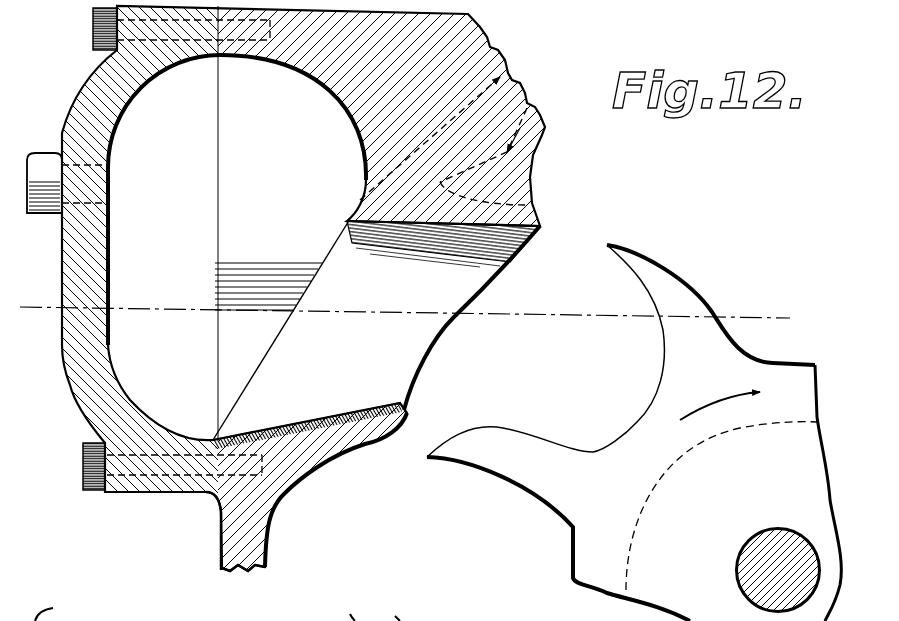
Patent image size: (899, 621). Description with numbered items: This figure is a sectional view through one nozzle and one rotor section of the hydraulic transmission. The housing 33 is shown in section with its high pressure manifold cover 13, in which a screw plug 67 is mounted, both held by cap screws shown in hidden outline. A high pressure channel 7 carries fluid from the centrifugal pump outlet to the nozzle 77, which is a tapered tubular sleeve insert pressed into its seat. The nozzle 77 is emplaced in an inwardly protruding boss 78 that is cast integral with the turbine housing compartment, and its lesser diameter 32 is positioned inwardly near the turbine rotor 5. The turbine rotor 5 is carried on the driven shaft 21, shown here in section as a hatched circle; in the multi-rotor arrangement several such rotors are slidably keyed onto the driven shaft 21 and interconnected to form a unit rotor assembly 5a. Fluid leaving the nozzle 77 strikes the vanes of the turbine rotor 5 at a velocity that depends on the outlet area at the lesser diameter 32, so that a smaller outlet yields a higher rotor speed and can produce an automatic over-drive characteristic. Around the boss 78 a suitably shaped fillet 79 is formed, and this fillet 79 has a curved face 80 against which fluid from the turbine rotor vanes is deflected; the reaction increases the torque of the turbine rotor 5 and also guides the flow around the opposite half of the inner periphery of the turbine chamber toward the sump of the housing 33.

The turbine rotor 5 is at (681, 272).
The unit rotor assembly 5a is at (217, 607).
The high pressure channel 7 is at (328, 93).
The high pressure manifold cover 13 is at (108, 71).
The driven shaft 21 is at (755, 541).
The lesser diameter of nozzle 32 is at (432, 358).
The housing 33 is at (232, 530).
The screw plug 67 is at (40, 154).
The nozzle 77 is at (405, 236).
The inwardly protruding boss 78 is at (362, 449).
The fillet 79 is at (538, 146).
The curved face 80 is at (533, 177).